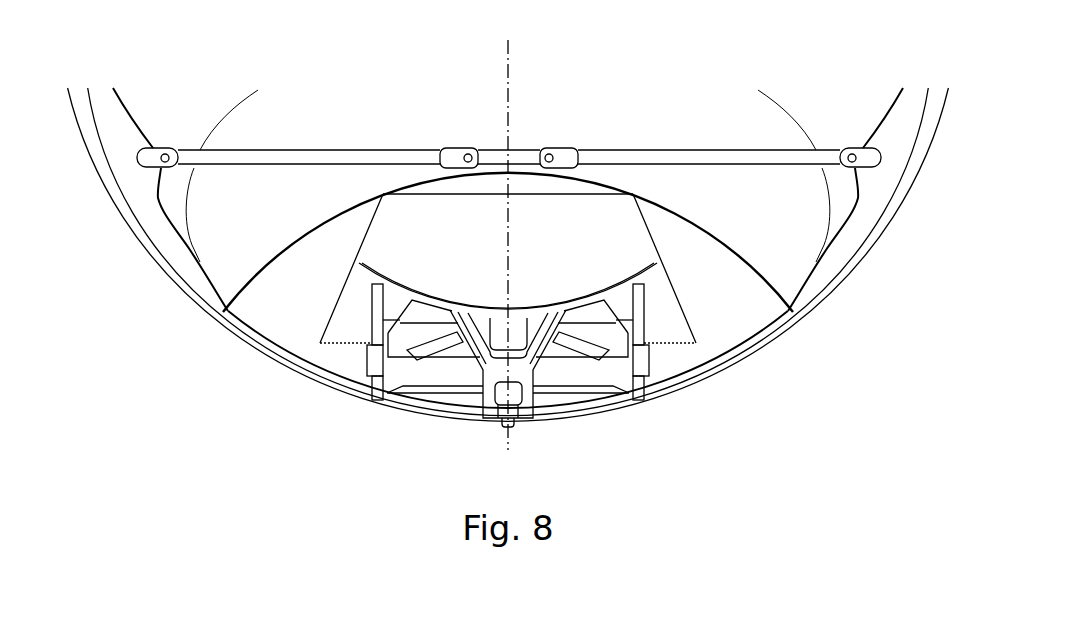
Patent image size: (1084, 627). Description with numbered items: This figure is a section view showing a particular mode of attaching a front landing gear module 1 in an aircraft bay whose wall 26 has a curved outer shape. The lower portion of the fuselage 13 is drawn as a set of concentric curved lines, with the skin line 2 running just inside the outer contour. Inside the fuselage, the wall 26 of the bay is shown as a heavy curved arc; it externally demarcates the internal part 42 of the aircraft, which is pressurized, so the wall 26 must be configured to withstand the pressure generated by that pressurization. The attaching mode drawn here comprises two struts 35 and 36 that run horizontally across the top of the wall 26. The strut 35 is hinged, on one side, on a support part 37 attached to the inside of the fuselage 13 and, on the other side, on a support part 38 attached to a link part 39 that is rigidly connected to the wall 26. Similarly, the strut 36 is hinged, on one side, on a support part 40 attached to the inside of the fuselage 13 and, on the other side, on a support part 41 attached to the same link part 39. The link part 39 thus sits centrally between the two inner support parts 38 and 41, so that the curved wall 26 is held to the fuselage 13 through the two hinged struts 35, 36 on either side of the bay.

The aircraft fuselage structure arrangement 1 is at (333, 395).
The fuselage skin / frame 2 is at (246, 343).
The fuselage 13 is at (928, 132).
The wall 26 is at (690, 218).
The strut 35 is at (305, 150).
The strut 36 is at (645, 150).
The support part 37 is at (163, 146).
The support part 38 is at (450, 148).
The link part 39 is at (490, 157).
The support part 40 is at (857, 147).
The support part 41 is at (560, 150).
The internal part 42 is at (244, 227).